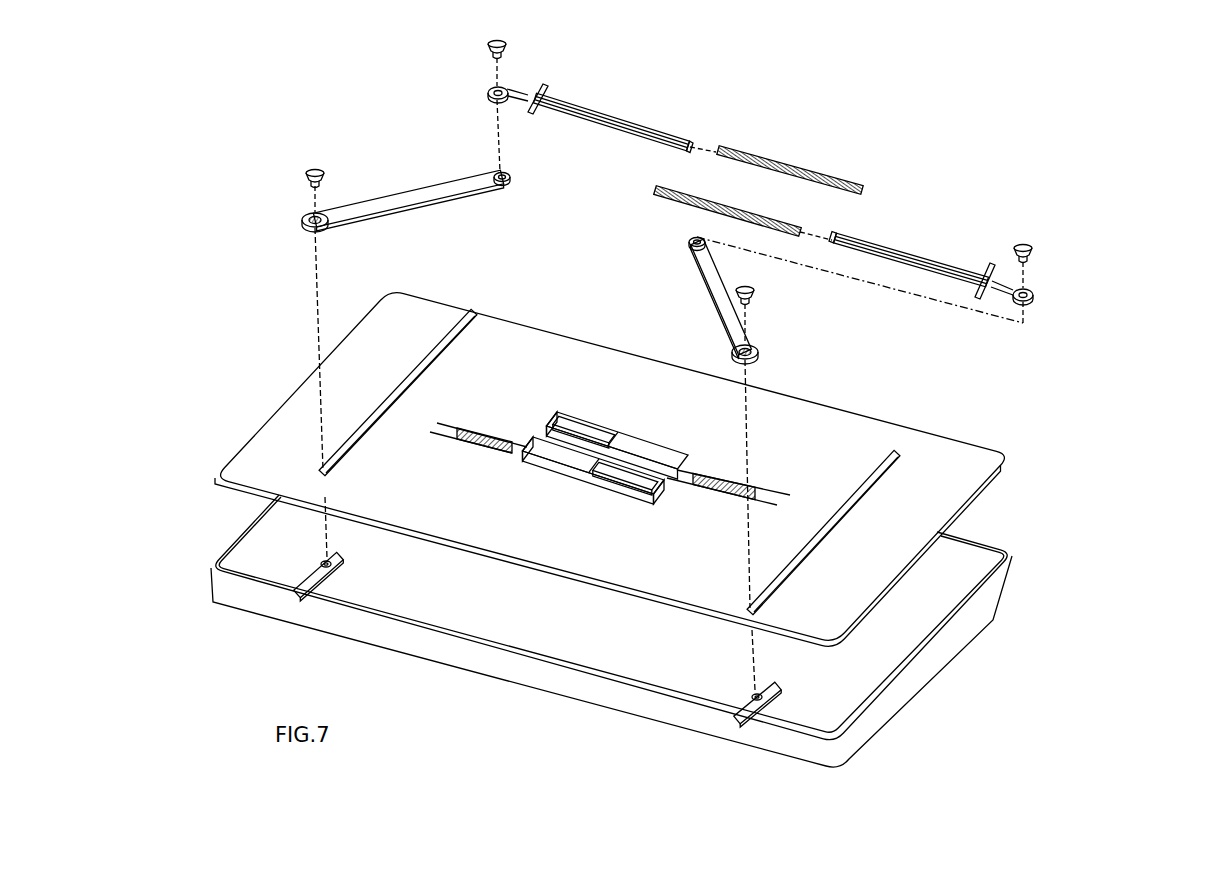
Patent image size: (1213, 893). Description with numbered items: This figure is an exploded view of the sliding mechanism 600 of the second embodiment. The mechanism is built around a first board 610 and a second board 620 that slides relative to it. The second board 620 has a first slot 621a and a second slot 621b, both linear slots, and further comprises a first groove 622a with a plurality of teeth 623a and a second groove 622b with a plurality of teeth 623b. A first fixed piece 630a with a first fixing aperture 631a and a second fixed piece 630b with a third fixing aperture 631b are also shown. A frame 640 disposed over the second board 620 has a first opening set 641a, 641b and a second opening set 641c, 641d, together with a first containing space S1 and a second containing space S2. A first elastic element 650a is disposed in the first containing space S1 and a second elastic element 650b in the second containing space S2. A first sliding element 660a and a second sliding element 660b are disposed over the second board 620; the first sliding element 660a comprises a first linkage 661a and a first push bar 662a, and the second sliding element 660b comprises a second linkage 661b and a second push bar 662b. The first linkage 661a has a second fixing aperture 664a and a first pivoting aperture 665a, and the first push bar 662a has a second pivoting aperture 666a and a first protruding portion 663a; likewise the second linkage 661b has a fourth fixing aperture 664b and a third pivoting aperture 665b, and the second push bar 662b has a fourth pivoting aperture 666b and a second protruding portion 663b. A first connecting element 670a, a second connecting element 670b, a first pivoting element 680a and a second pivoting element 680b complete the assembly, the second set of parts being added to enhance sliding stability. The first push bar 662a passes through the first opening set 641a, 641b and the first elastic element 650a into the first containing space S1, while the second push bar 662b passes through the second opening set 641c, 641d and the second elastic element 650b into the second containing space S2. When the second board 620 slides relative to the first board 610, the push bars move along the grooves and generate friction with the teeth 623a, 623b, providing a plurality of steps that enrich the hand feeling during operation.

The sliding mechanism 600 is at (1040, 79).
The first board 610 is at (980, 548).
The second board 620 is at (943, 434).
The first slot 621a is at (447, 342).
The second slot 621b is at (890, 467).
The first groove 622a is at (757, 482).
The second groove 622b is at (480, 433).
The teeth 623a is at (720, 487).
The teeth 623b is at (463, 447).
The first fixed piece 630a is at (310, 577).
The second fixed piece 630b is at (758, 694).
The first fixing aperture 631a is at (289, 550).
The third fixing aperture 631b is at (718, 682).
The frame 640 is at (630, 433).
The first opening set 641a is at (543, 427).
The first opening set 641b is at (693, 470).
The second opening set 641c is at (533, 453).
The second opening set 641d is at (673, 493).
The first containing space S1 is at (573, 425).
The second containing space S2 is at (633, 480).
The first elastic element 650a is at (782, 157).
The second elastic element 650b is at (680, 215).
The first sliding element 660a is at (399, 128).
The second sliding element 660b is at (1112, 228).
The first linkage 661a is at (405, 205).
The second linkage 661b is at (710, 290).
The first push bar 662a is at (617, 113).
The second push bar 662b is at (872, 240).
The first protruding portion 663a is at (542, 92).
The second protruding portion 663b is at (996, 264).
The second fixing aperture 664a is at (306, 213).
The fourth fixing aperture 664b is at (755, 345).
The first pivoting aperture 665a is at (494, 170).
The third pivoting aperture 665b is at (697, 247).
The second pivoting aperture 666a is at (492, 87).
The fourth pivoting aperture 666b is at (1030, 288).
The first connecting element 670a is at (308, 168).
The second connecting element 670b is at (754, 293).
The first pivoting element 680a is at (492, 42).
The second pivoting element 680b is at (1030, 248).